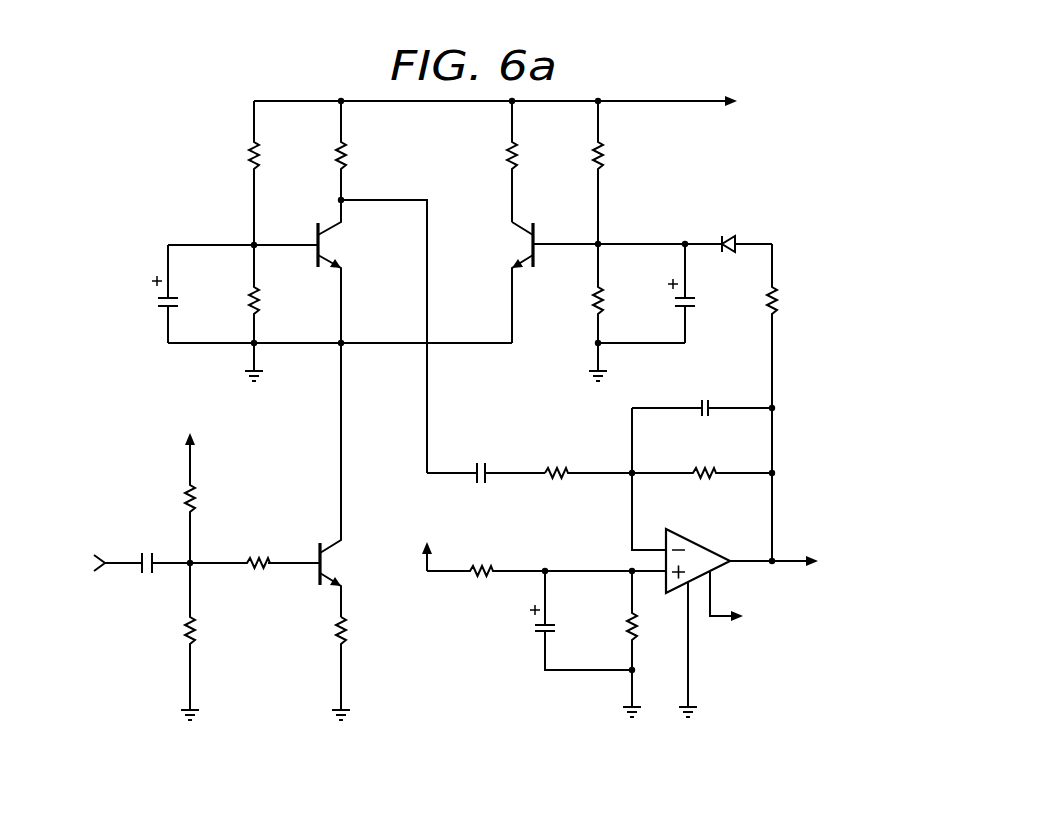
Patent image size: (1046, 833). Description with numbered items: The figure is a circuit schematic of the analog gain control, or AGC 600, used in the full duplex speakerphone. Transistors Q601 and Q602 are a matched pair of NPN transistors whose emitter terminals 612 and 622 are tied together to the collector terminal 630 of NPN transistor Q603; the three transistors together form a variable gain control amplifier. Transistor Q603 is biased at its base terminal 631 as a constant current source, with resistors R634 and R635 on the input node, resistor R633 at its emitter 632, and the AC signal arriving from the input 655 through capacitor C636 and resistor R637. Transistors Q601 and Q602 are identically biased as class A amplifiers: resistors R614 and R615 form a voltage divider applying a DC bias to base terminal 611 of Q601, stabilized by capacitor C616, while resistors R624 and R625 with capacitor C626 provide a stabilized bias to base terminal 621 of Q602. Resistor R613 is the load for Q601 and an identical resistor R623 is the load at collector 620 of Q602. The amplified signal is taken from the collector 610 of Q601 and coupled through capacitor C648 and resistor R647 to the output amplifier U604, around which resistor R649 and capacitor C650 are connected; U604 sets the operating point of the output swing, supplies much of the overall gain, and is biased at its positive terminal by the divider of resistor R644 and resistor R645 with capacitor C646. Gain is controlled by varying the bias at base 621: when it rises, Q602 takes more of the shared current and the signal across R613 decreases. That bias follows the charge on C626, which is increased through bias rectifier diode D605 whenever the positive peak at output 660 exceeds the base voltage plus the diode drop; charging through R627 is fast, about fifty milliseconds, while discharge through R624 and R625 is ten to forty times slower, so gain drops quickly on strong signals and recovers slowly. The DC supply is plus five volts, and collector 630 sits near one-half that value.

The analog gain control (AGC) 600 is at (260, 57).
The collector 610 is at (338, 193).
The base terminal 611 is at (300, 247).
The emitter terminal 612 is at (343, 287).
The collector 620 is at (513, 208).
The base terminal 621 is at (552, 247).
The emitter terminal 622 is at (510, 288).
The collector terminal 630 is at (342, 522).
The base terminal 631 is at (292, 562).
The emitter 632 is at (340, 600).
The input 655 is at (118, 566).
The output 660 is at (788, 557).
The load resistor R613 is at (368, 150).
The resistor R614 is at (228, 173).
The resistor R615 is at (228, 294).
The capacitor C616 is at (142, 294).
The NPN transistor Q601 is at (331, 254).
The NPN transistor Q602 is at (521, 261).
The load resistor R623 is at (537, 161).
The resistor R624 is at (624, 172).
The resistor R625 is at (624, 293).
The capacitor C626 is at (706, 293).
The bias rectifier diode D605 is at (738, 231).
The resistor R627 is at (798, 402).
The capacitor C650 is at (702, 393).
The capacitor C648 is at (486, 462).
The resistor R647 is at (582, 459).
The resistor R649 is at (702, 459).
The resistor R644 is at (486, 560).
The capacitor C646 is at (558, 620).
The resistor R645 is at (607, 620).
The output amplifier U604 is at (724, 615).
The capacitor C636 is at (157, 549).
The resistor R634 is at (210, 482).
The resistor R635 is at (214, 641).
The resistor R637 is at (255, 551).
The NPN transistor Q603 is at (338, 484).
The resistor R633 is at (365, 668).